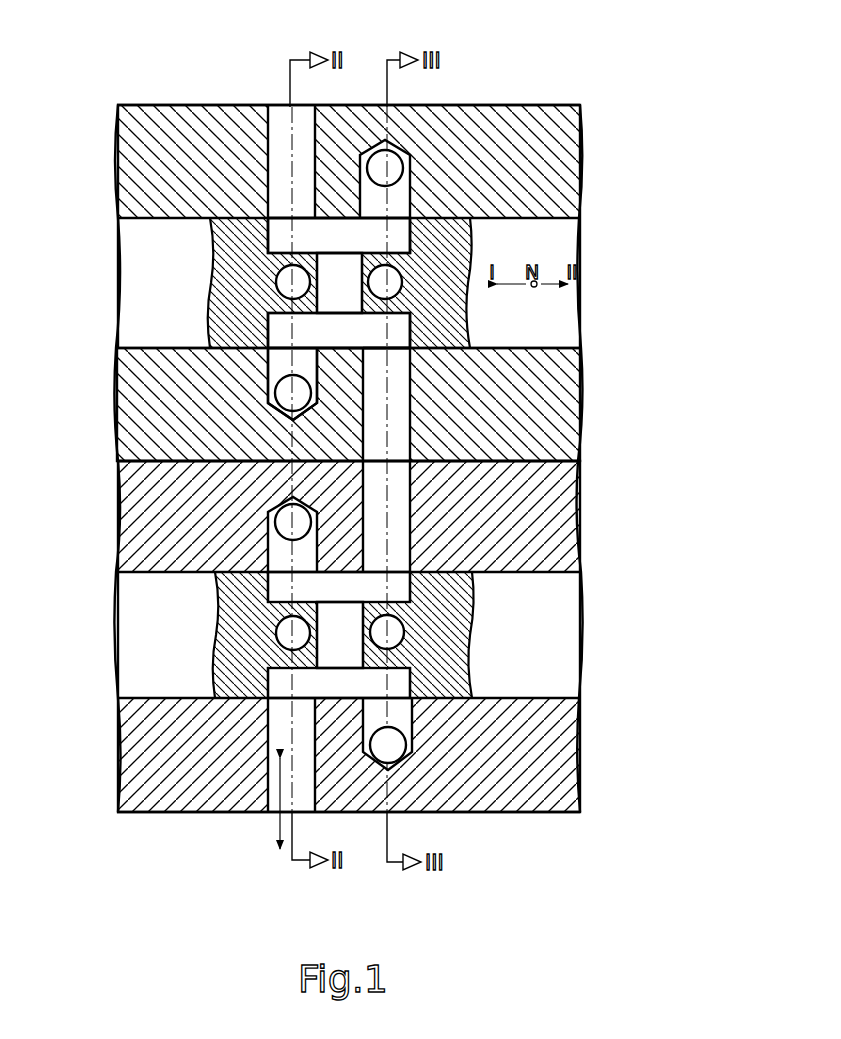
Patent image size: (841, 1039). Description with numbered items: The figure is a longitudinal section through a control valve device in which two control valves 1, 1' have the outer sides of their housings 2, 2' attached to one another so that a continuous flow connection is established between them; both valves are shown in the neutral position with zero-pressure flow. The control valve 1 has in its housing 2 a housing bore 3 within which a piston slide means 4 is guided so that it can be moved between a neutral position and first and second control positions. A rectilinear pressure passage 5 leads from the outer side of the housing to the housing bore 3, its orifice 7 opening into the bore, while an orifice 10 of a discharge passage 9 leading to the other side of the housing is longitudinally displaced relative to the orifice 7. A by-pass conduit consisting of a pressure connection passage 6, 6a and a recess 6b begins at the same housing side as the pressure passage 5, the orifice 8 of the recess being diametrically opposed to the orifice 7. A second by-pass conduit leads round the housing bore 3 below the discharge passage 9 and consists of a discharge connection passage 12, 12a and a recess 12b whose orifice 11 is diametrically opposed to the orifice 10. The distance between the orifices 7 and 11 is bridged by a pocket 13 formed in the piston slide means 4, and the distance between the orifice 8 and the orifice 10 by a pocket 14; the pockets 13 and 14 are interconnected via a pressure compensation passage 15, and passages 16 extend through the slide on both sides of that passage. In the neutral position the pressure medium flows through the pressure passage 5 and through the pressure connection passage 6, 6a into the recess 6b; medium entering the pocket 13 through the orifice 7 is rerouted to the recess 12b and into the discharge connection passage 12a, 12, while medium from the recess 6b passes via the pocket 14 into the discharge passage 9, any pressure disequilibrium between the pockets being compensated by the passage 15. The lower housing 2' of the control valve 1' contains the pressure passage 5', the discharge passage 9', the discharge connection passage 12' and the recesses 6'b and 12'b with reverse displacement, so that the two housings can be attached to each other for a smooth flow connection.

The control valve 1 is at (405, 226).
The control valve 1' is at (411, 636).
The housing 2 is at (386, 161).
The housing 2' is at (394, 665).
The housing bore 3 is at (557, 223).
The piston slide means 4 is at (447, 327).
The pressure passage 5 is at (348, 256).
The pressure passage 5' is at (394, 516).
The pressure connection passage 6 is at (221, 235).
The pressure connection passage 6a is at (283, 398).
The recess 6b is at (280, 372).
The recess 6'b is at (527, 734).
The orifice 7 is at (279, 154).
The orifice 8 is at (267, 325).
The discharge passage 9 is at (513, 460).
The discharge passage 9' is at (182, 755).
The orifice 10 is at (367, 353).
The orifice 11 is at (275, 215).
The discharge connection passage 12 is at (527, 459).
The discharge connection passage 12' is at (166, 459).
The discharge connection passage 12a is at (392, 170).
The recess 12b is at (397, 205).
The recess 12'b is at (178, 534).
The pocket 13 is at (357, 251).
The pocket 14 is at (356, 341).
The pressure compensation passage 15 is at (351, 289).
The passages 16 is at (283, 280).